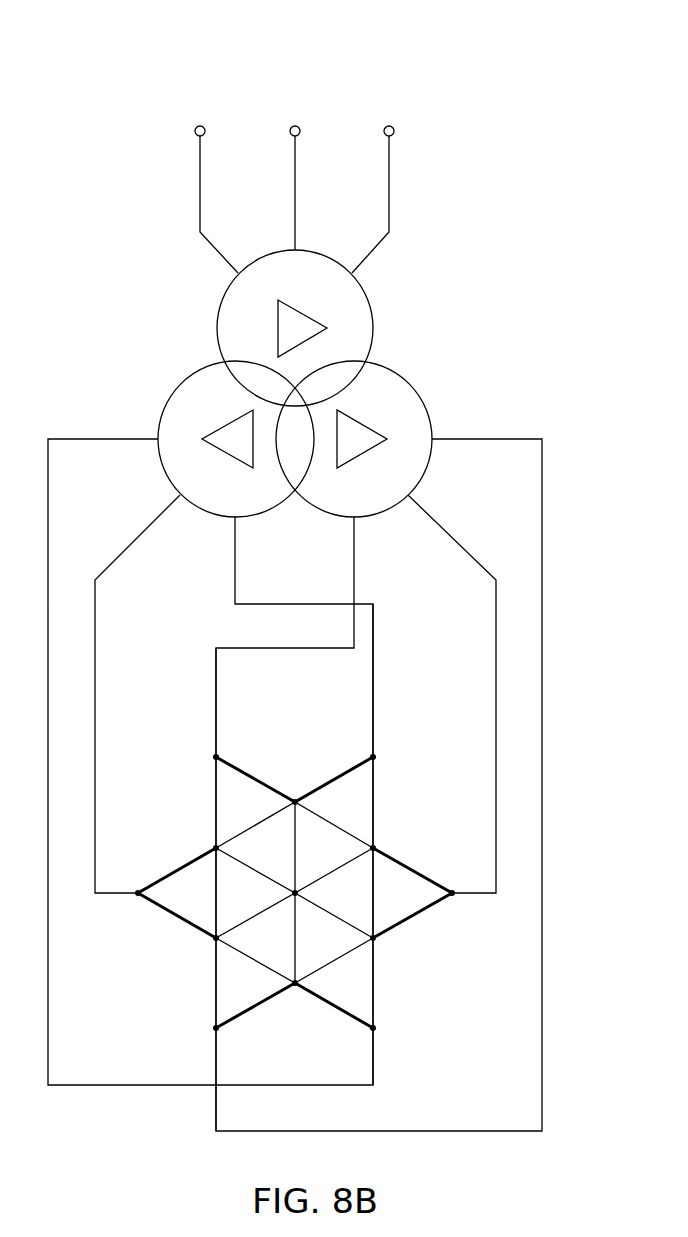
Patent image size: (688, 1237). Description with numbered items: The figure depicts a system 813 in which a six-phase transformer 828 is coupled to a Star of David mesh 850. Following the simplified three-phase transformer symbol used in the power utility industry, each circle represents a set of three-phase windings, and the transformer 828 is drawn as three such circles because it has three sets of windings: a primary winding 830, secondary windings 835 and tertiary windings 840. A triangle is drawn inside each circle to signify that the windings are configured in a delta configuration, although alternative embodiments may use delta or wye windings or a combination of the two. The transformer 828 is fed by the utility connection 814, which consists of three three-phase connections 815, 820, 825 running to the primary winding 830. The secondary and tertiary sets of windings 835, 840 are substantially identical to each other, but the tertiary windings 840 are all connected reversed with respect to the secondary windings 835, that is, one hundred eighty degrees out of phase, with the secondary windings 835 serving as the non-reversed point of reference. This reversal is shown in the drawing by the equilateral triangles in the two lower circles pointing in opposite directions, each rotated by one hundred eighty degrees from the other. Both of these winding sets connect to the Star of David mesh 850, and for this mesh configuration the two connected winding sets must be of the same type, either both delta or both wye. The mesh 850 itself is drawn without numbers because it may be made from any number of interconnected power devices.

The system 813 is at (591, 88).
The utility connection 814 is at (152, 103).
The three-phase connection 815 is at (209, 180).
The three-phase connection 820 is at (293, 168).
The three-phase connection 825 is at (379, 180).
The 6-phase transformer 828 is at (181, 345).
The primary winding 830 is at (369, 303).
The secondary windings 835 is at (185, 380).
The tertiary windings 840 is at (408, 378).
The Star of David mesh 850 is at (165, 810).